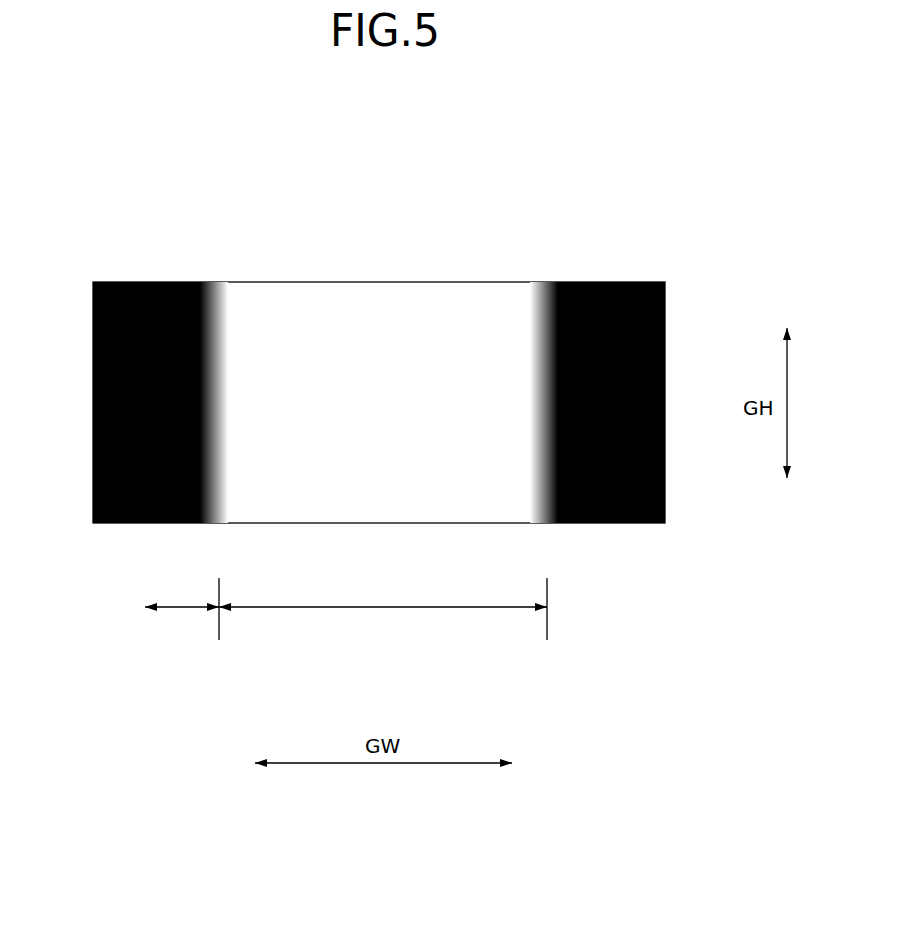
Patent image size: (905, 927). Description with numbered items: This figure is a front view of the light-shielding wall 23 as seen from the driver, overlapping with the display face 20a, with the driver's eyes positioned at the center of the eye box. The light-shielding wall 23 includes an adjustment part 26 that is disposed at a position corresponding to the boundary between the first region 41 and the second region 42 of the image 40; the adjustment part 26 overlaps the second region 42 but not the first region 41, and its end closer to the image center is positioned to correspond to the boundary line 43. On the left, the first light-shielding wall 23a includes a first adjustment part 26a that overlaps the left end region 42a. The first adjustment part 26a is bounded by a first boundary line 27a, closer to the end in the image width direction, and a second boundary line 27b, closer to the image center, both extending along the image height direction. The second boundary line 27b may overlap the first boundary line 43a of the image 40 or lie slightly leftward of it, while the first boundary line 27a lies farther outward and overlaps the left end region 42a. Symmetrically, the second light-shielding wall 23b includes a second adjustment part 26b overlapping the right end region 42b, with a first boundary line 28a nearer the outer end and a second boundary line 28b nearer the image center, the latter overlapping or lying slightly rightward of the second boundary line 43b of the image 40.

The light-shielding wall 23 is at (108, 247).
The first light-shielding wall 23a is at (215, 270).
The second light-shielding wall 23b is at (665, 270).
The adjustment part 26 is at (384, 327).
The first adjustment part 26a is at (197, 302).
The second adjustment part 26b is at (558, 303).
The first boundary line 27a is at (180, 346).
The second boundary line 27b is at (215, 368).
The first boundary line 28a is at (580, 347).
The second boundary line 28b is at (543, 368).
The display face 20a is at (342, 347).
The image 40 is at (295, 370).
The first region 41 is at (383, 596).
The second region 42 is at (371, 579).
The left end region 42a is at (182, 579).
The right end region 42b is at (577, 571).
The boundary line 43 is at (384, 635).
The first boundary line 43a is at (222, 635).
The second boundary line 43b is at (546, 635).